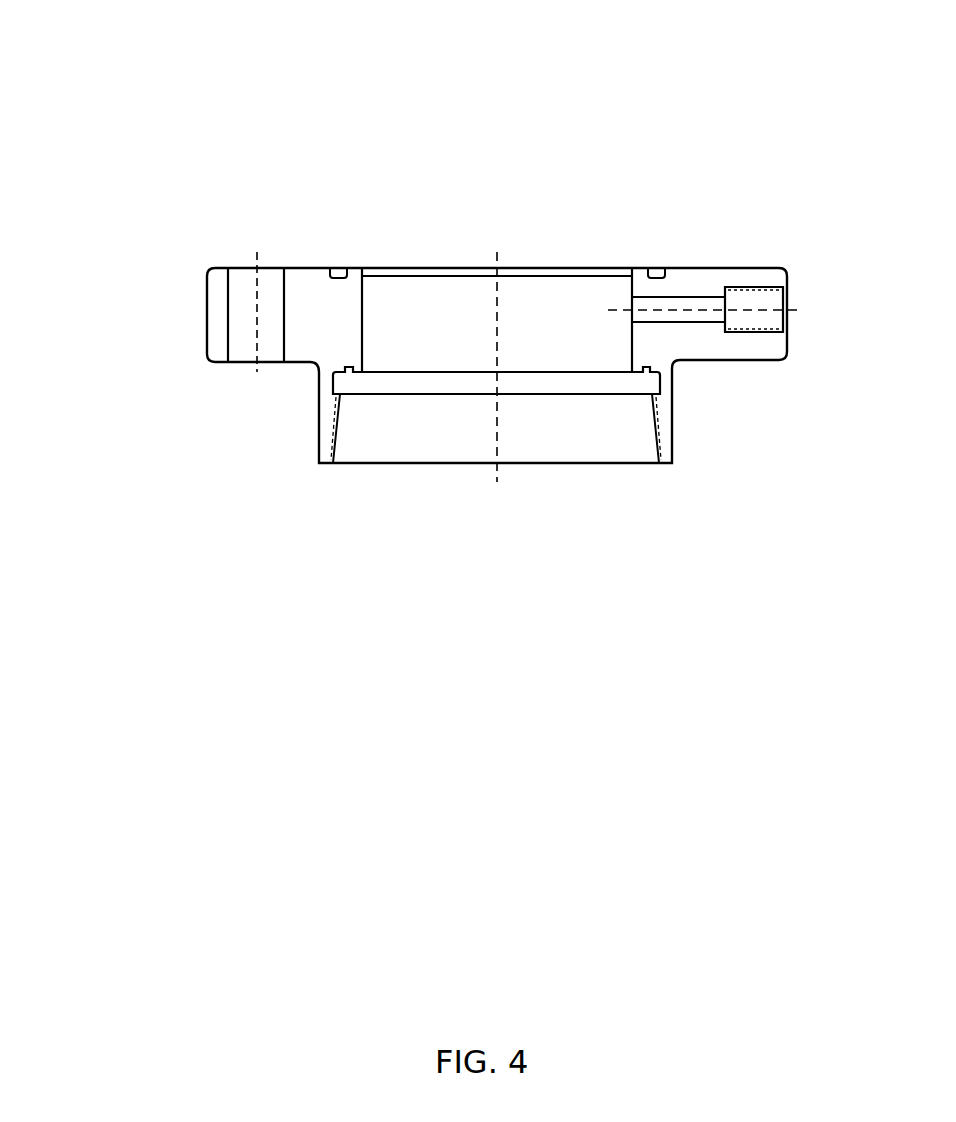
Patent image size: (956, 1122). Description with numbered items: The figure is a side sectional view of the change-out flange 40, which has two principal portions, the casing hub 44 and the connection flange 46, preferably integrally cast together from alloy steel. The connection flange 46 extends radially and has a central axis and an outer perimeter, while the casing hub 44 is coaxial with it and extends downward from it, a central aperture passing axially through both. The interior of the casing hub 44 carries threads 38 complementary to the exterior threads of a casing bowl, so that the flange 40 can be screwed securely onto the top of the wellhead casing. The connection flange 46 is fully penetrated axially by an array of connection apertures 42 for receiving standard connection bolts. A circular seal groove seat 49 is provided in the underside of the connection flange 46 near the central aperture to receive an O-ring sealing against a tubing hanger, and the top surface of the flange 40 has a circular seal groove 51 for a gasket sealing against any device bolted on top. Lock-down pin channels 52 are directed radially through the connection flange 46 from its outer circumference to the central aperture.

The threads 38 is at (655, 462).
The change-out flange 40 is at (491, 80).
The connection apertures 42 is at (247, 322).
The casing hub 44 is at (318, 427).
The connection flange 46 is at (315, 287).
The seal groove seat 49 is at (335, 372).
The seal groove 51 is at (332, 270).
The lock-down pin channels 52 is at (707, 300).